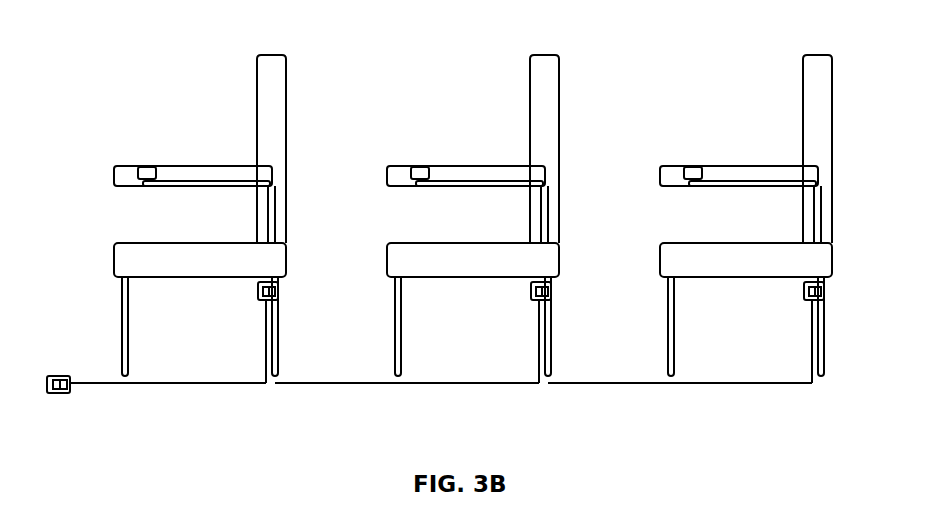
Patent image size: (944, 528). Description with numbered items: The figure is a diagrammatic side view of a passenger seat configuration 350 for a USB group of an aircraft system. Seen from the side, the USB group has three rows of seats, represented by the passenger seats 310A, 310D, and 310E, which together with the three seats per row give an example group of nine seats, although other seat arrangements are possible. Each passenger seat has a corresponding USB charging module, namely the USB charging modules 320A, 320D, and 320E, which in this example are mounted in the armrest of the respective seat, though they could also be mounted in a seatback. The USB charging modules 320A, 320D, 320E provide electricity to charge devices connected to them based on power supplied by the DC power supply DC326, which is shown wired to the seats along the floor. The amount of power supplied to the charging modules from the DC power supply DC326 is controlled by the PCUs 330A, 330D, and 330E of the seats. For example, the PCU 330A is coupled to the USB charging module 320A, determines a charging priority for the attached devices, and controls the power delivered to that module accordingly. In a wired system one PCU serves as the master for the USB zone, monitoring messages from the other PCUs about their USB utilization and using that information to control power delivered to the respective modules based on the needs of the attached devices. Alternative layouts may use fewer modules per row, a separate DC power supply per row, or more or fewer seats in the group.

The passenger seat configuration 350 is at (171, 62).
The passenger seat 310A is at (275, 88).
The passenger seat 310D is at (584, 149).
The passenger seat 310E is at (831, 128).
The USB charging module 320A is at (162, 139).
The PCU 330A is at (193, 151).
The USB charging module 320D is at (409, 147).
The PCU 330D is at (466, 151).
The USB charging module 320E is at (681, 147).
The PCU 330E is at (739, 151).
The DC power supply DC326 is at (258, 290).